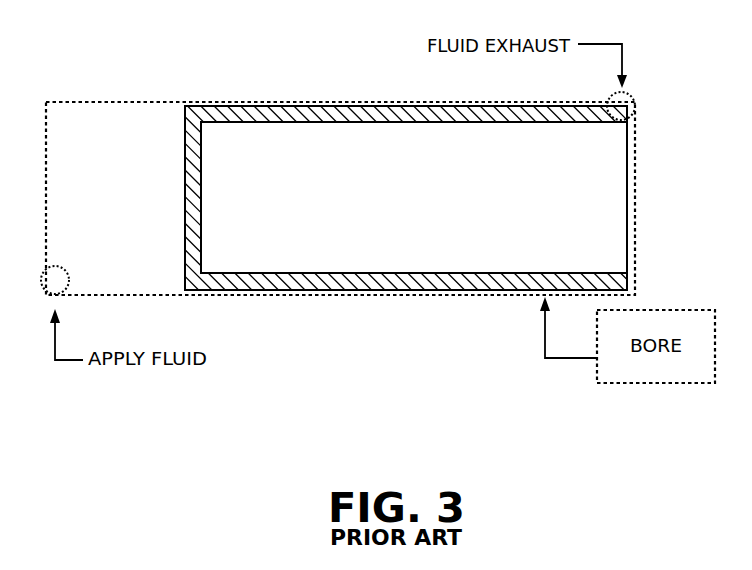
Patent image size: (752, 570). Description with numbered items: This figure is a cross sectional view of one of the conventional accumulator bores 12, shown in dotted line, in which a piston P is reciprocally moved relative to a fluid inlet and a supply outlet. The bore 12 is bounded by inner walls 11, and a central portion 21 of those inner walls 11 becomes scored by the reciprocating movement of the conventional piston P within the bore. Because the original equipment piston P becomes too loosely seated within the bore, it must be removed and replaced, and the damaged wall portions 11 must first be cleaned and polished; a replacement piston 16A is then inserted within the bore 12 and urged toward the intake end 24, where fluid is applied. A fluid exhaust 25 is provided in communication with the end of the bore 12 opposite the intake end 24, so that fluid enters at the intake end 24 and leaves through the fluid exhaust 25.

The inner wall 11 is at (132, 102).
The accumulator bore 12 is at (123, 203).
The replacement piston 16A is at (230, 136).
The central portion 21 is at (363, 106).
The intake end 24 is at (47, 293).
The fluid exhaust 25 is at (637, 103).
The piston P is at (186, 235).